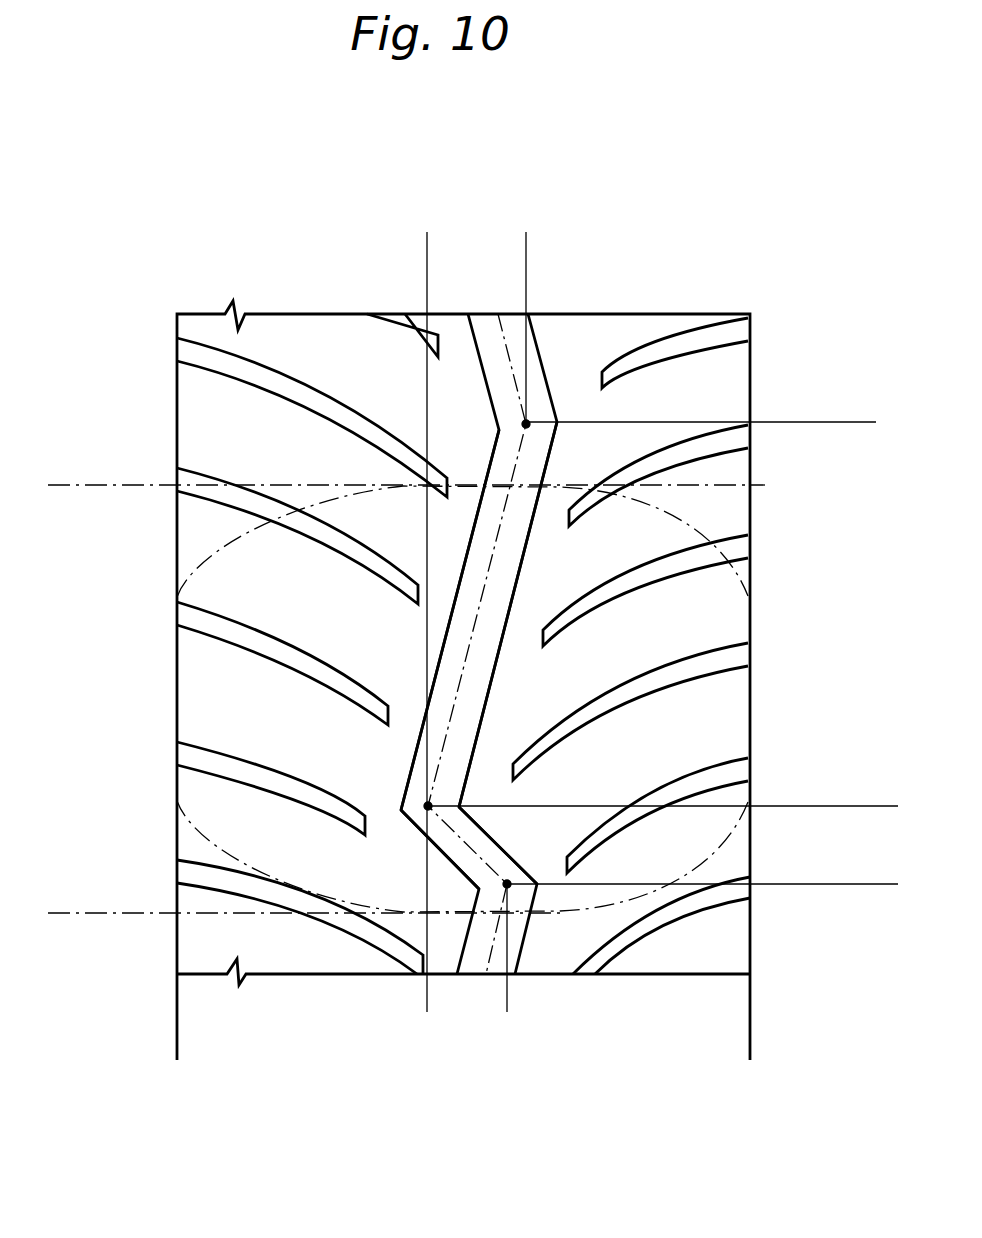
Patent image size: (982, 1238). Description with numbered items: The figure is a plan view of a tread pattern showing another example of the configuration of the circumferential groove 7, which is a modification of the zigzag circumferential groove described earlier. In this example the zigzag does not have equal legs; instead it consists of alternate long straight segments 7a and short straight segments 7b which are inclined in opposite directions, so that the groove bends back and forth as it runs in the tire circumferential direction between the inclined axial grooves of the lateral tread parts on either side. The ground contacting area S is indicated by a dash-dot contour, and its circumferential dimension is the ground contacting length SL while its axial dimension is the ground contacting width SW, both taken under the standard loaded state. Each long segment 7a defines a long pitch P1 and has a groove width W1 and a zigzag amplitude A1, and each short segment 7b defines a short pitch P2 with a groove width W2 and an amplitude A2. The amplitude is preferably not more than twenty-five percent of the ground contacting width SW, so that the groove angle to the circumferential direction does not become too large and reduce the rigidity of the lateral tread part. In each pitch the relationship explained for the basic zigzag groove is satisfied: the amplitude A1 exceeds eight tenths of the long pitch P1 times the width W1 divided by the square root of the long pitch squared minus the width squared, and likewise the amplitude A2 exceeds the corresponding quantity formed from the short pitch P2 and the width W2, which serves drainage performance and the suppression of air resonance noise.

The circumferential groove 7 is at (508, 324).
The long straight segment 7a is at (485, 709).
The short straight segment 7b is at (505, 850).
The ground contacting area S is at (421, 479).
The ground contacting length SL is at (67, 486).
The ground contacting width SW is at (177, 1043).
The amplitude of the long pitch A1 is at (526, 243).
The amplitude of the short pitch A2 is at (427, 1002).
The groove width of the long segment W1 is at (445, 556).
The groove width of the short segment W2 is at (432, 872).
The long pitch P1 is at (845, 422).
The short pitch P2 is at (845, 806).